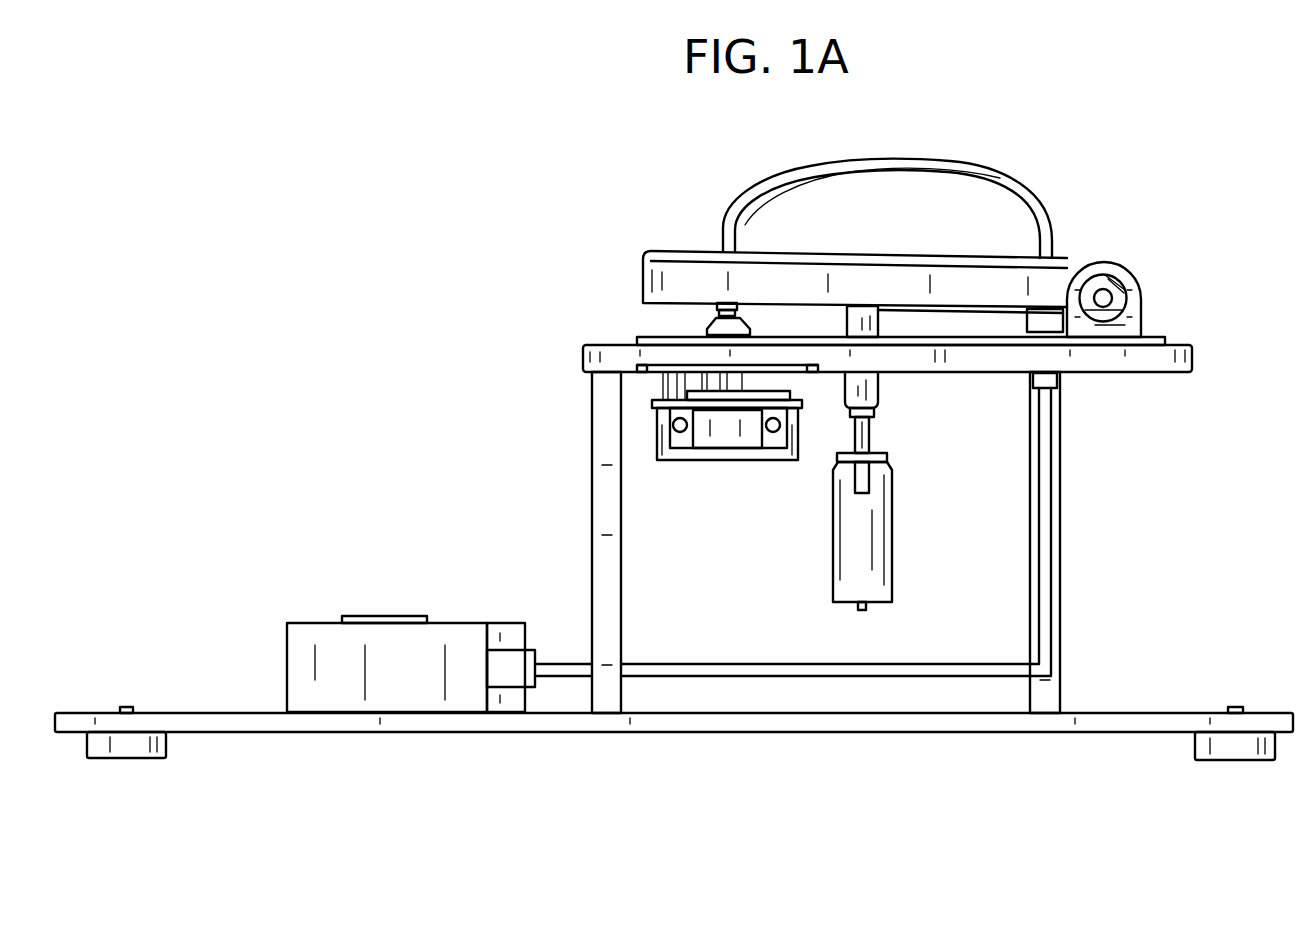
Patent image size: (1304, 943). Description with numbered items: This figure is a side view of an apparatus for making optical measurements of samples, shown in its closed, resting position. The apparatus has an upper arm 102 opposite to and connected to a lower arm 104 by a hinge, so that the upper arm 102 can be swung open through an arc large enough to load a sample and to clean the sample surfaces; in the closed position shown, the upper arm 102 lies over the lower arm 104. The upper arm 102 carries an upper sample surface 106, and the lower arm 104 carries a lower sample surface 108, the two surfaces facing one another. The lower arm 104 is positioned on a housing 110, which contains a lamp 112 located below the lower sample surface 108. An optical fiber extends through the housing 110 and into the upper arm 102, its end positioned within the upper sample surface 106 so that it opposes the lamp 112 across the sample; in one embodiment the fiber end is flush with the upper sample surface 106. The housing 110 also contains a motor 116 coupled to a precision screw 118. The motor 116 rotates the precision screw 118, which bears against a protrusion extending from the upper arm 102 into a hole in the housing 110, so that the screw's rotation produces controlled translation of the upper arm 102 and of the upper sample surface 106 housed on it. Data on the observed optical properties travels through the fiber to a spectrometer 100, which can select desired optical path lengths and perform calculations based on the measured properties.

The spectrometer 100 is at (308, 622).
The upper arm 102 is at (642, 243).
The lower arm 104 is at (1196, 363).
The upper sample surface 106 is at (716, 311).
The lower sample surface 108 is at (707, 327).
The housing 110 is at (605, 512).
The lamp 112 is at (662, 424).
The motor 116 is at (843, 564).
The precision screw 118 is at (871, 436).